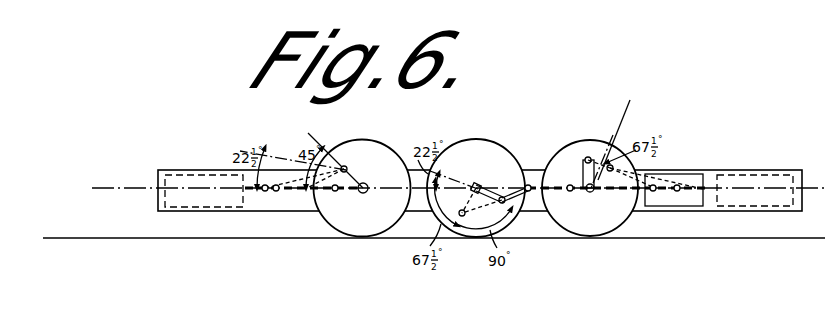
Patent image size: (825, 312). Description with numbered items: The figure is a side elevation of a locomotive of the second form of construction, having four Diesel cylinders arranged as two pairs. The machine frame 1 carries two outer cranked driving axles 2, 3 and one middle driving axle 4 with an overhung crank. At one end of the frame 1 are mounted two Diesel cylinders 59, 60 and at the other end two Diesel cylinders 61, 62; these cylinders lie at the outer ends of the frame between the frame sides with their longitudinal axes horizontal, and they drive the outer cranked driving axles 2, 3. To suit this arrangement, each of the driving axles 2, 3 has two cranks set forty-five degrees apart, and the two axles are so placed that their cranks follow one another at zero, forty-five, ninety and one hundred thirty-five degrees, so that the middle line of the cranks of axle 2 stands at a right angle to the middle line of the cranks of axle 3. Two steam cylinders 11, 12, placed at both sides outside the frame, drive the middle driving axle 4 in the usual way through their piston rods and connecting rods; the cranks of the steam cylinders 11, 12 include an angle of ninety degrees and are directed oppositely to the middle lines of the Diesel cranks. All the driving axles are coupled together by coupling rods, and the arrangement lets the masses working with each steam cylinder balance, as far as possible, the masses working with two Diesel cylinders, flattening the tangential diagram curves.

The frame 1 is at (263, 204).
The cranked driving axle 2 is at (366, 193).
The cranked driving axle 3 is at (589, 193).
The middle driving axle 4 is at (477, 186).
The steam cylinder 11 is at (688, 205).
The steam cylinder 12 is at (685, 204).
The Diesel cylinder 59 is at (190, 172).
The Diesel cylinder 60 is at (186, 177).
The Diesel cylinder 61 is at (766, 174).
The Diesel cylinder 62 is at (748, 171).